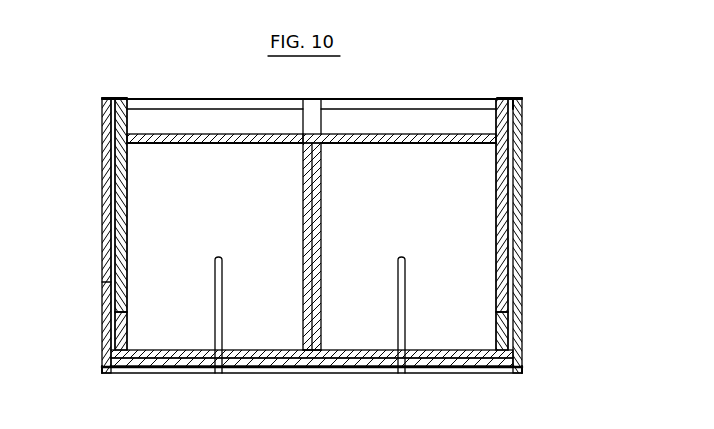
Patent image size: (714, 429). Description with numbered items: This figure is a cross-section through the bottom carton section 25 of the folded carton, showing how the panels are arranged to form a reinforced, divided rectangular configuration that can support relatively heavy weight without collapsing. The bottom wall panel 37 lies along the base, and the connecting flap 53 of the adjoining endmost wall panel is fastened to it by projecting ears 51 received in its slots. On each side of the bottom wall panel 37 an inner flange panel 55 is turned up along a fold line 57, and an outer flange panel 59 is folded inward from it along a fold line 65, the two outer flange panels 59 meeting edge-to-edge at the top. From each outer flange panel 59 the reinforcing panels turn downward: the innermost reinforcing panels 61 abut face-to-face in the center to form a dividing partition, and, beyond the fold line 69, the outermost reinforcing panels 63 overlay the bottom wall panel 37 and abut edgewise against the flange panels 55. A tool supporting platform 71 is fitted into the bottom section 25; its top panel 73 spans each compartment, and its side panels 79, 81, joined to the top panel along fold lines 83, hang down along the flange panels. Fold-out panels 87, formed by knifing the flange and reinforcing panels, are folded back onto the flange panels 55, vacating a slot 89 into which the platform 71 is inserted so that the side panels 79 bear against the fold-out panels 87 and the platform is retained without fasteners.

The bottom carton section 25 is at (102, 197).
The bottom wall panel 37 is at (178, 362).
The projecting ears 51 is at (102, 282).
The connecting flap 53 is at (436, 374).
The flange panel 55 is at (517, 212).
The fold line 57 is at (102, 369).
The flange panel 59 is at (180, 99).
The reinforcing panel 61 is at (312, 101).
The reinforcing panel 63 is at (150, 351).
The fold line 65 is at (102, 98).
The fold line 69 is at (317, 352).
The tool supporting platform 71 is at (383, 131).
The top panel 73 is at (220, 133).
The side panel 79 is at (128, 262).
The side panel 81 is at (496, 231).
The fold line 83 is at (127, 130).
The fold-out panel 87 is at (125, 203).
The slot 89 is at (498, 102).